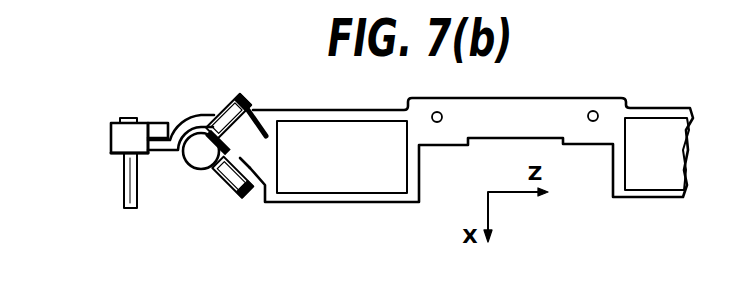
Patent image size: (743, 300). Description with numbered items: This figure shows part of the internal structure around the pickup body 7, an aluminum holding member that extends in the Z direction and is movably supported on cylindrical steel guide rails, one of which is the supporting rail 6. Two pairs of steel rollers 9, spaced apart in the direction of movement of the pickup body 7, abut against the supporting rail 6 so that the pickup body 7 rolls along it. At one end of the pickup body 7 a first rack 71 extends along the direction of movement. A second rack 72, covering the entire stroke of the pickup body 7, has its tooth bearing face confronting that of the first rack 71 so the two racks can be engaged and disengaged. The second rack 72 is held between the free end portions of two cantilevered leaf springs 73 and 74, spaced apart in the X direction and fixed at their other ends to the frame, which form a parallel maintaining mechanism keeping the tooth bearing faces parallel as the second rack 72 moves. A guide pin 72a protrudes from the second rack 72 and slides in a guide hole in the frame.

The supporting rail 6 is at (199, 143).
The pickup body 7 is at (548, 78).
The steel rollers 9 is at (247, 103).
The first rack 71 is at (158, 152).
The second rack 72 is at (157, 128).
The guide pin 72a is at (123, 194).
The leaf spring 73 is at (108, 153).
The leaf spring 74 is at (117, 118).